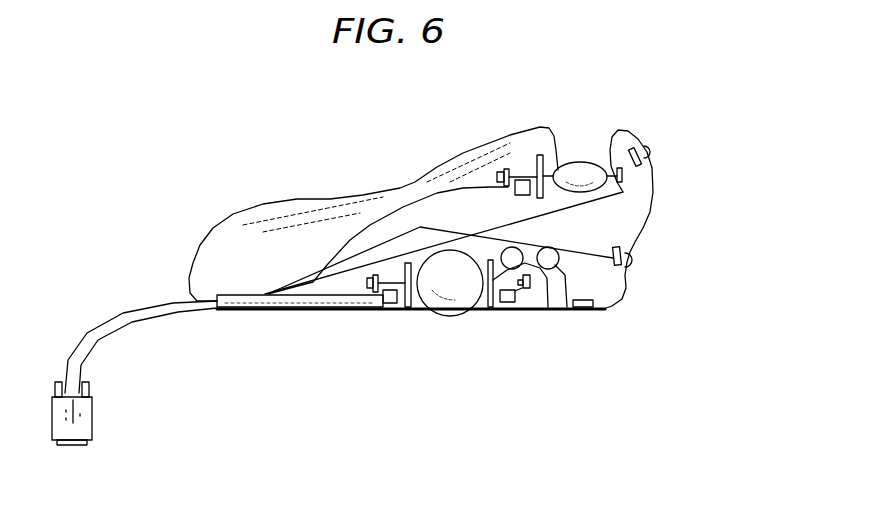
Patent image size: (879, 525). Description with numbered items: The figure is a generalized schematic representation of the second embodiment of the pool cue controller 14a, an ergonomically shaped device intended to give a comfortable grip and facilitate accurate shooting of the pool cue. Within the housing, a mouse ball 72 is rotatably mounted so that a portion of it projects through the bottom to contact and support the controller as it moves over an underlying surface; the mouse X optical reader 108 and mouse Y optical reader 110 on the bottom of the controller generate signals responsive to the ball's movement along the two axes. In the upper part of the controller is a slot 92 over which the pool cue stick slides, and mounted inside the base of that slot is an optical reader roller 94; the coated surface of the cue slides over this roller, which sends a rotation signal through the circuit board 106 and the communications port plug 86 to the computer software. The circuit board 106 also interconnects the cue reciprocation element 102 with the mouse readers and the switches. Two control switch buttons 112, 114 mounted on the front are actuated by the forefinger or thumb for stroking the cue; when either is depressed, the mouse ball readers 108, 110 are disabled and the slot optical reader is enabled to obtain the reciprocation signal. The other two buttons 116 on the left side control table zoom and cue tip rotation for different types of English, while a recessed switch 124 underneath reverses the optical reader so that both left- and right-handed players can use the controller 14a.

The pool cue controller 14a is at (421, 218).
The mouse ball 72 is at (455, 329).
The communications port plug 86 is at (134, 373).
The slot 92 is at (575, 125).
The optical reader roller 94 is at (602, 126).
The cue reciprocation optical reader element 102 is at (510, 139).
The circuit board 106 is at (300, 339).
The mouse X optical reader 108 is at (510, 332).
The mouse Y optical reader 110 is at (389, 323).
The control switch button 112 is at (686, 148).
The control switch button 114 is at (672, 259).
The buttons 116 is at (532, 315).
The recessed switch 124 is at (603, 339).